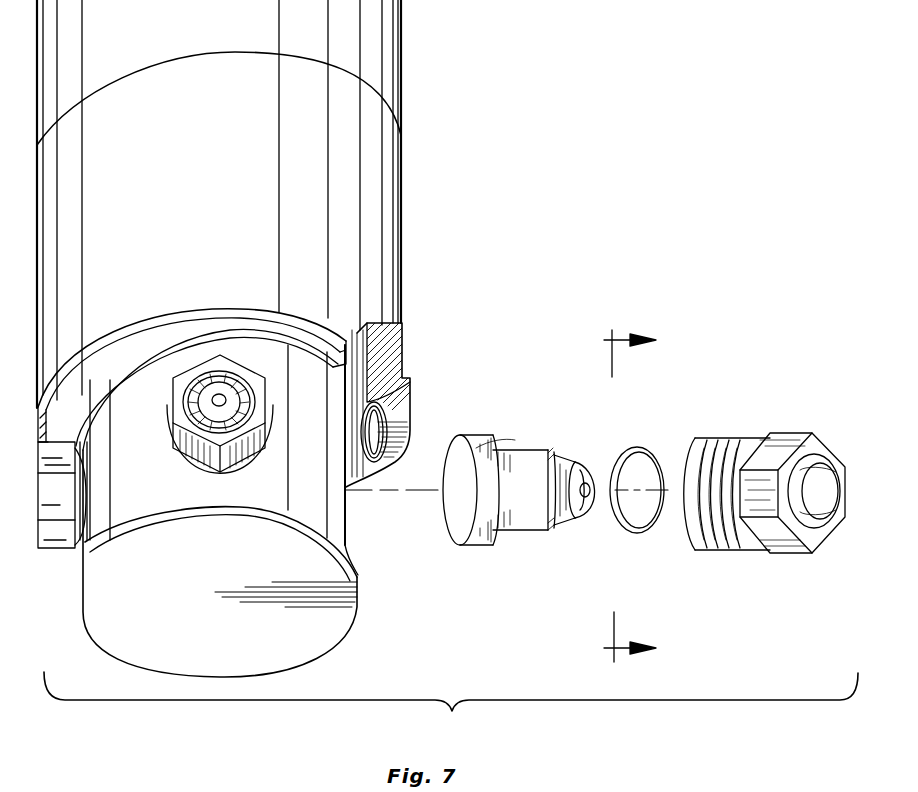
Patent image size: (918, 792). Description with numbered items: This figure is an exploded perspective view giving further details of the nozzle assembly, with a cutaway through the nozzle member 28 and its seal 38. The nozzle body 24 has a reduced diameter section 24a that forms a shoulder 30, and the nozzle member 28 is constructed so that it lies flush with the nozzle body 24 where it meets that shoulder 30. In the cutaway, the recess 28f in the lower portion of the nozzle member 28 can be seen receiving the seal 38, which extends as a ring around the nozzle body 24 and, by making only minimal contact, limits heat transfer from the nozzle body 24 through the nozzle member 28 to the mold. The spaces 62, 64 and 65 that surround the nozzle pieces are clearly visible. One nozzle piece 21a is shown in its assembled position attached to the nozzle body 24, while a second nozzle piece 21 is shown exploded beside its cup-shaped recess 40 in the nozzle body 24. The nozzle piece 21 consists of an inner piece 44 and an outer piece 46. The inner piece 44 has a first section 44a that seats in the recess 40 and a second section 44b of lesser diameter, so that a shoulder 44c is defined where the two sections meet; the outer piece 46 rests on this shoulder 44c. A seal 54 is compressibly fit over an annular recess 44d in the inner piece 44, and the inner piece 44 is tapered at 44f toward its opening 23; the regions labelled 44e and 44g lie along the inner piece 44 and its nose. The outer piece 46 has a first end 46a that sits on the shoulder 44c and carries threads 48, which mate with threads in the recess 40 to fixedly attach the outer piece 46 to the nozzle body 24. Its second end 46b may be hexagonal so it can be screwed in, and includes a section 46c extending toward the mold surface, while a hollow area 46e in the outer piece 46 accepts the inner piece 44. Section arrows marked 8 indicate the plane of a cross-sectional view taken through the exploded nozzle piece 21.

The nozzle body 24 is at (403, 74).
The shoulder 30 is at (377, 92).
The space 62 is at (182, 348).
The reduced diameter section 24a is at (247, 352).
The space 65 is at (80, 540).
The space 64 is at (192, 487).
The nozzle piece 21a is at (238, 462).
The nozzle member 28 is at (398, 352).
The recess 28f is at (405, 383).
The seal 38 is at (400, 467).
The cup-shaped recess 40 is at (356, 510).
The inner piece 44 is at (529, 502).
The first section 44a is at (466, 537).
The second section 44b is at (536, 450).
The shoulder 44c is at (505, 442).
The annular recess 44d is at (556, 528).
The fitting neck 44e is at (518, 533).
The taper 44f is at (552, 450).
The fitting nose 44g is at (576, 526).
The opening 23 is at (588, 484).
The seal 54 is at (646, 455).
The nozzle piece 21 is at (702, 392).
The threads 48 is at (713, 438).
The outer piece 46 is at (789, 481).
The first end 46a is at (712, 550).
The second end 46b is at (790, 553).
The section 46c is at (830, 524).
The hollow area 46e is at (822, 486).
The section line 8- 8 is at (640, 498).